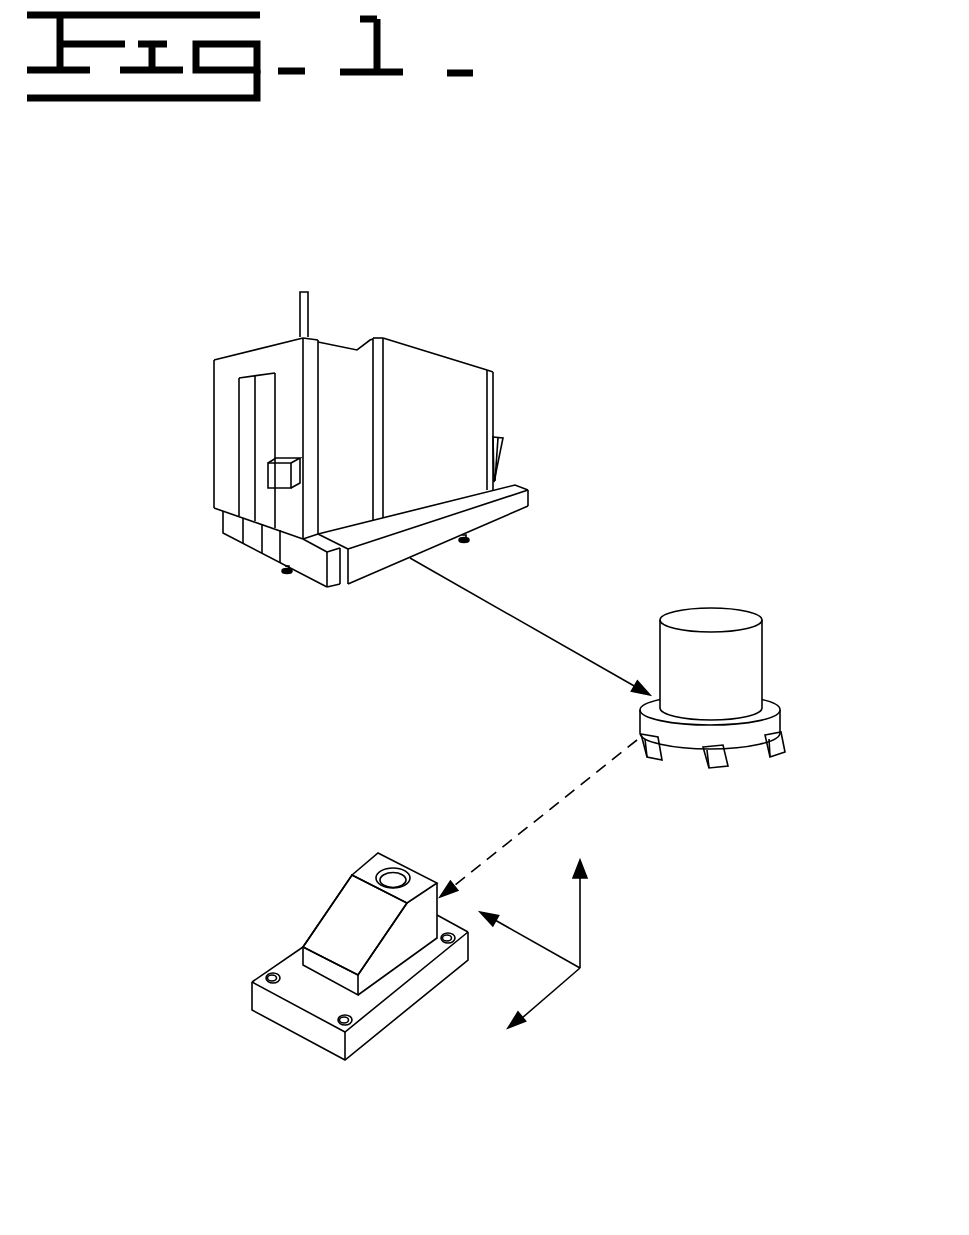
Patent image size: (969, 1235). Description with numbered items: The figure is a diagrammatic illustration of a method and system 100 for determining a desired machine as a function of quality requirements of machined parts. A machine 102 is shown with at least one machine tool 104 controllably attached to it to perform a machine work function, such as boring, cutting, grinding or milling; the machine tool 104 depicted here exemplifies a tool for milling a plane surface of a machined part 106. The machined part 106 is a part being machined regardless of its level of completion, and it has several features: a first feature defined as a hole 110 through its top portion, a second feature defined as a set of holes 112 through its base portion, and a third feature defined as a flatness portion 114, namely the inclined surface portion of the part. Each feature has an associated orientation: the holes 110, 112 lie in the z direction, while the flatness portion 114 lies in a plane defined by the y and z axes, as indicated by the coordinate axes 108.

The method and system 100 is at (707, 309).
The machine 102 is at (528, 492).
The machine tool 104 is at (767, 657).
The machined part 106 is at (351, 883).
The coordinate system 108 is at (630, 940).
The hole 110 is at (396, 868).
The holes 112 is at (258, 978).
The flatness portion 114 is at (332, 926).